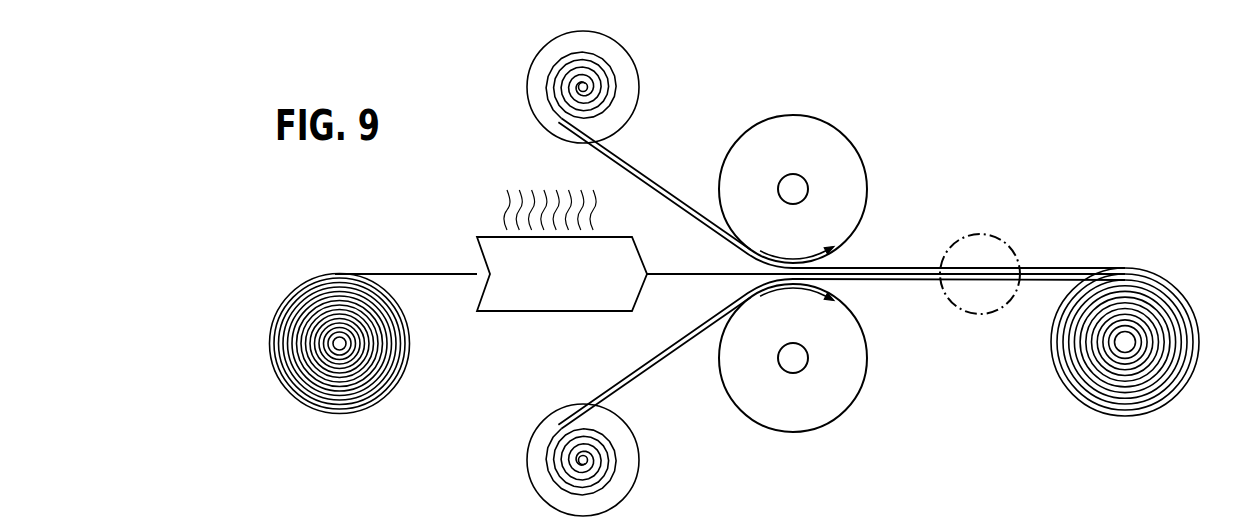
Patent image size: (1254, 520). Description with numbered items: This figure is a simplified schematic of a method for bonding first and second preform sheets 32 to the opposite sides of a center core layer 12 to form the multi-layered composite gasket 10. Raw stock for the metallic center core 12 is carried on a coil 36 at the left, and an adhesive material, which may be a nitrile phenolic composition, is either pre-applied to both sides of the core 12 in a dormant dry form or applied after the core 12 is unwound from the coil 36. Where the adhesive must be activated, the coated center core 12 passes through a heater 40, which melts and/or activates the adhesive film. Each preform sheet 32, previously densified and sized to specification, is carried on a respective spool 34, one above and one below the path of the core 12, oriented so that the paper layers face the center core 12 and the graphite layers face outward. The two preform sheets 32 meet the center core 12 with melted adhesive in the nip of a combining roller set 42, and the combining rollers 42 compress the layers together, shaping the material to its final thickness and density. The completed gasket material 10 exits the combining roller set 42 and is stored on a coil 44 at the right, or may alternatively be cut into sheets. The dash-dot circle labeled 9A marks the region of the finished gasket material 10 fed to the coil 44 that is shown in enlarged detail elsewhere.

The gasket 10 is at (1069, 258).
The center core layer 12 is at (414, 272).
The preform sheet 32 is at (653, 183).
The spool 34 is at (627, 52).
The coil 36 is at (301, 404).
The heater 40 is at (535, 290).
The combining roller set 42 is at (828, 147).
The coil 44 is at (1188, 383).
The detail region of FIG. 9A is at (992, 232).